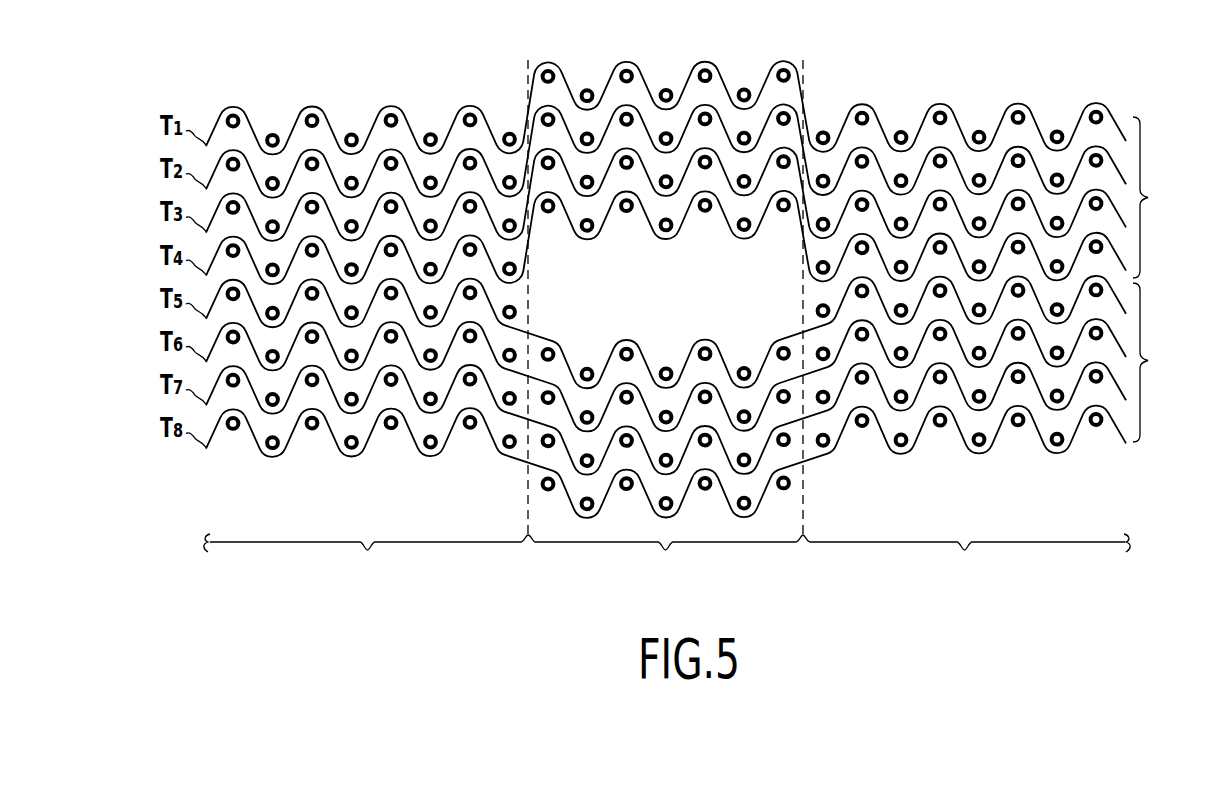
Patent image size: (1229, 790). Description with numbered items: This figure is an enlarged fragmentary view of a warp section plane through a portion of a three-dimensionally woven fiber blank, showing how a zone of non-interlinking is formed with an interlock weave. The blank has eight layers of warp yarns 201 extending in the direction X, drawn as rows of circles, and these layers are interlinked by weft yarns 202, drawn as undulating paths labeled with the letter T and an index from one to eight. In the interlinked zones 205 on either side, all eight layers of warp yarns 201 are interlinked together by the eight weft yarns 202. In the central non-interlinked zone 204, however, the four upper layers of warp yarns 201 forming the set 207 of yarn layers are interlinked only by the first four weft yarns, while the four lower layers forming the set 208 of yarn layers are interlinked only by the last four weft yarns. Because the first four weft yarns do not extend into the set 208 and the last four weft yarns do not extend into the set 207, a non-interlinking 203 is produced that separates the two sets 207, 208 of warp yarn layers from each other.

The warp yarns 201 is at (470, 113).
The weft yarns 202 is at (299, 150).
The non-interlinking 203 is at (691, 303).
The non-interlinking zone 204 is at (683, 583).
The interlinked zone 205 is at (385, 583).
The set of yarn layers 207 is at (1160, 197).
The set of yarn layers 208 is at (1160, 362).